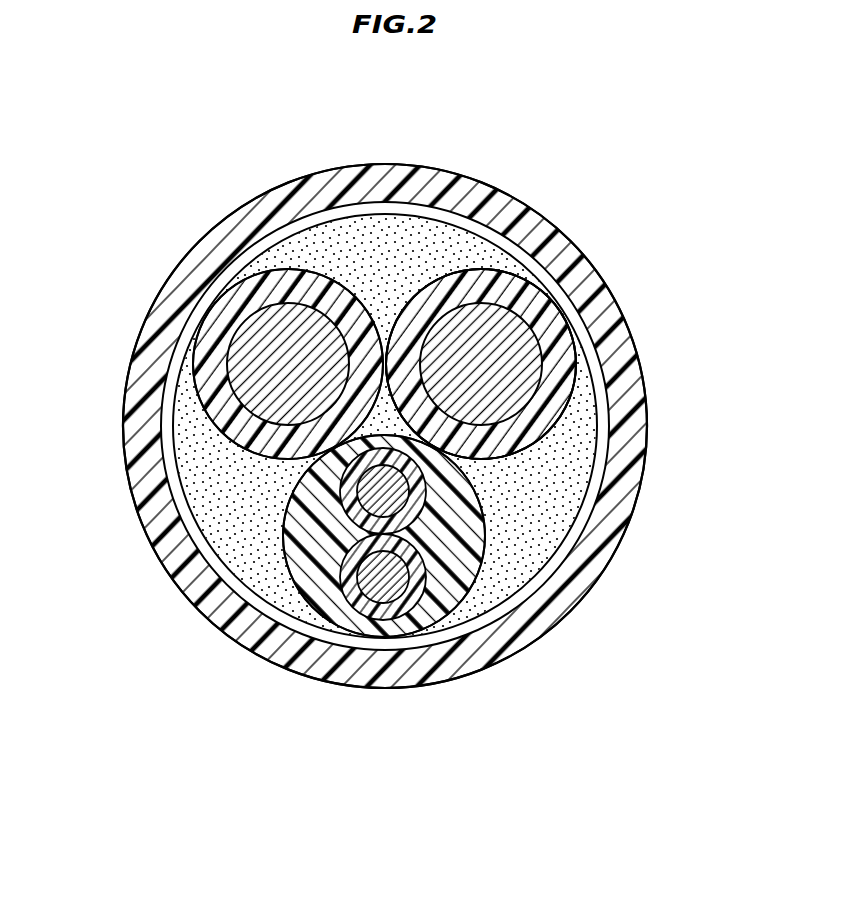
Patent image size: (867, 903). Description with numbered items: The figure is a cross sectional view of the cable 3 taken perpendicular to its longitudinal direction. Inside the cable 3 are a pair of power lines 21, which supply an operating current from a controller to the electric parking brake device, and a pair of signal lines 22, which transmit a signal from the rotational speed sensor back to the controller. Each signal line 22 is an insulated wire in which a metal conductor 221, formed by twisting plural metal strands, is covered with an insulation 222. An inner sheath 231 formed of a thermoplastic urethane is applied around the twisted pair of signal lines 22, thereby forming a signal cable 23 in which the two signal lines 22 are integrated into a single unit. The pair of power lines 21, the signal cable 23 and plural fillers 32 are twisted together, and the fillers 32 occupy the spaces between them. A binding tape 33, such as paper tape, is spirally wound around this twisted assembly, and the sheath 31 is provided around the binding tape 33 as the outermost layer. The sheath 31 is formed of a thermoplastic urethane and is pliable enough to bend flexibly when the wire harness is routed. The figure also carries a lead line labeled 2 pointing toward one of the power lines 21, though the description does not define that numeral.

The cable 3 is at (202, 150).
The electric wire assembly 2 is at (497, 270).
The power line 21 is at (193, 363).
The metal conductor 221 is at (520, 352).
The insulation 222 is at (558, 378).
The signal line 22 is at (340, 570).
The signal cable 23 is at (470, 587).
The inner sheath 231 is at (438, 600).
The sheath 31 is at (623, 495).
The filler 32 is at (552, 522).
The binding tape 33 is at (553, 562).